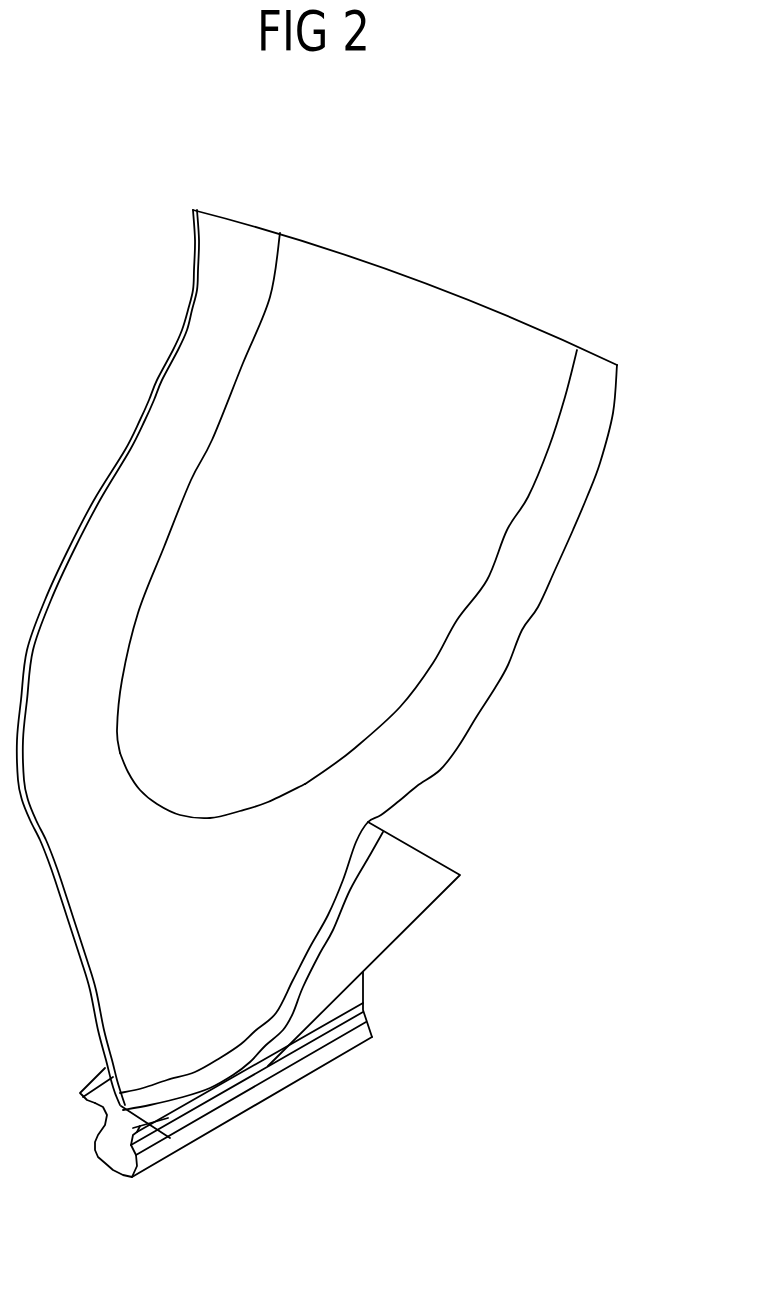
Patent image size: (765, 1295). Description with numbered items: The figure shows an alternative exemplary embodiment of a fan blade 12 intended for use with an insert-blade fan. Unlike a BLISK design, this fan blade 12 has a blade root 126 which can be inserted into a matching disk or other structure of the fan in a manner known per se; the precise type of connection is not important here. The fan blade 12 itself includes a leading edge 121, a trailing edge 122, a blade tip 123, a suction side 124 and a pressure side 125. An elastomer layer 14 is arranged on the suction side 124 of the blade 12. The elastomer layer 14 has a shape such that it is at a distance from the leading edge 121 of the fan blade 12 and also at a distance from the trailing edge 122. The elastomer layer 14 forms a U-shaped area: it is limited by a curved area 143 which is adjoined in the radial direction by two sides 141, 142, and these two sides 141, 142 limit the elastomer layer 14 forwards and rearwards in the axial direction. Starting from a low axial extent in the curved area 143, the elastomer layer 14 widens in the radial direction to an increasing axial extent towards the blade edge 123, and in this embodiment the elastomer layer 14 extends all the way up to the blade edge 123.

The fan blade 12 is at (338, 716).
The elastomer layer 14 is at (347, 525).
The leading edge 121 is at (114, 467).
The trailing edge 122 is at (580, 530).
The blade tip 123 is at (457, 295).
The suction side 124 is at (185, 375).
The pressure side 125 is at (536, 636).
The blade root 126 is at (116, 1156).
The side 141 is at (210, 448).
The side 142 is at (527, 496).
The curved area 143 is at (123, 757).